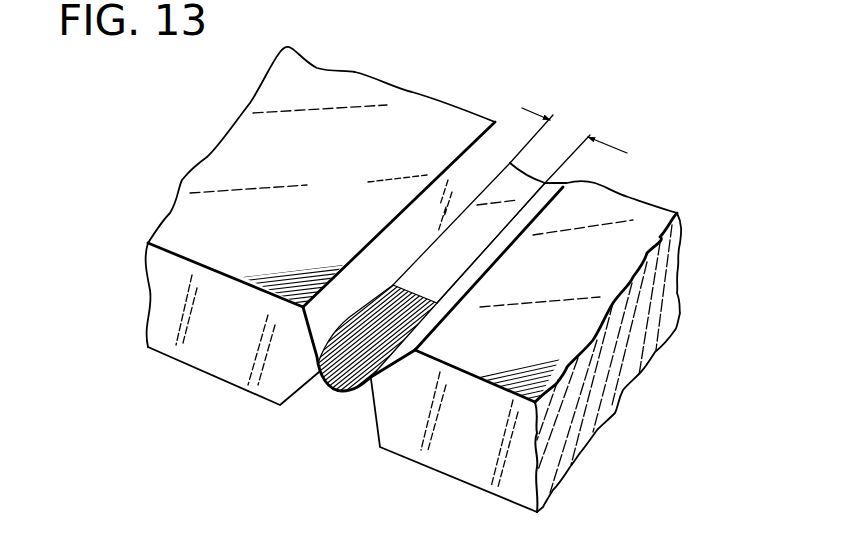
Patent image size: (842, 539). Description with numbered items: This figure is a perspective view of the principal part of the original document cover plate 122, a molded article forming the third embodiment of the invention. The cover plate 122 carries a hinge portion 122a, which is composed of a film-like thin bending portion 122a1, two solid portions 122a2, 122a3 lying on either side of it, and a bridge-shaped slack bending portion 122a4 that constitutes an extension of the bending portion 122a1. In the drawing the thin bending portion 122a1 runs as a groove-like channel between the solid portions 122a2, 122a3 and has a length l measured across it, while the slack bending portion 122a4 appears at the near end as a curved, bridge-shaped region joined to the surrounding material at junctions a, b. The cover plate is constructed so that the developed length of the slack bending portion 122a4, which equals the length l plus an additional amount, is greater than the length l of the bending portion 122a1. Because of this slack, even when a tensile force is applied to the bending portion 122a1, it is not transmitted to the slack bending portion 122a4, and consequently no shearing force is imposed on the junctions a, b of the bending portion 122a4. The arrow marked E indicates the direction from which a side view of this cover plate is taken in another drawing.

The original document cover plate 122 is at (610, 202).
The hinge portion 122a is at (514, 146).
The bending portion 122a1 is at (430, 260).
The solid portion 122a2 is at (467, 182).
The solid portion 122a3 is at (487, 258).
The slack bending portion 122a4 is at (383, 313).
The length of the bending portion l is at (568, 143).
The junction a is at (316, 381).
The junction b is at (364, 392).
The direction E is at (317, 450).